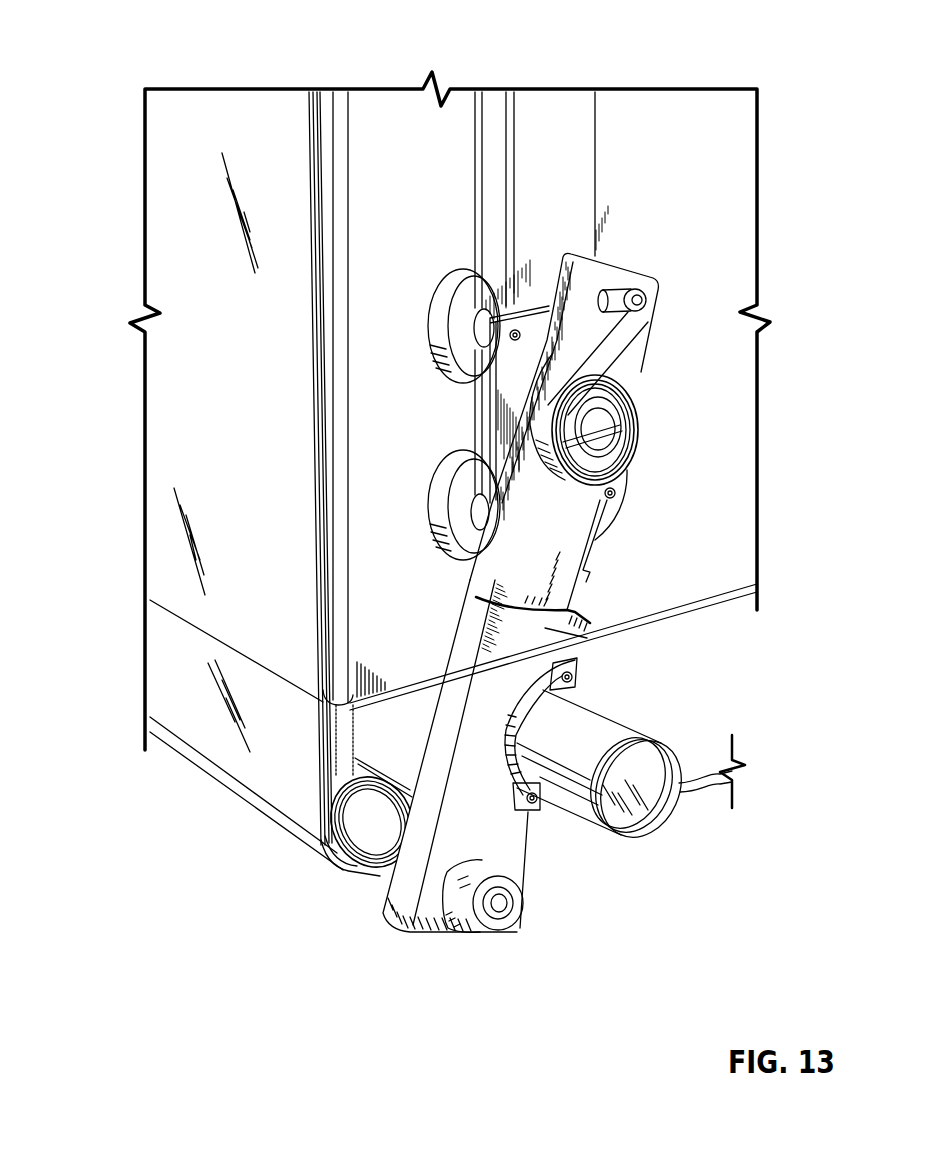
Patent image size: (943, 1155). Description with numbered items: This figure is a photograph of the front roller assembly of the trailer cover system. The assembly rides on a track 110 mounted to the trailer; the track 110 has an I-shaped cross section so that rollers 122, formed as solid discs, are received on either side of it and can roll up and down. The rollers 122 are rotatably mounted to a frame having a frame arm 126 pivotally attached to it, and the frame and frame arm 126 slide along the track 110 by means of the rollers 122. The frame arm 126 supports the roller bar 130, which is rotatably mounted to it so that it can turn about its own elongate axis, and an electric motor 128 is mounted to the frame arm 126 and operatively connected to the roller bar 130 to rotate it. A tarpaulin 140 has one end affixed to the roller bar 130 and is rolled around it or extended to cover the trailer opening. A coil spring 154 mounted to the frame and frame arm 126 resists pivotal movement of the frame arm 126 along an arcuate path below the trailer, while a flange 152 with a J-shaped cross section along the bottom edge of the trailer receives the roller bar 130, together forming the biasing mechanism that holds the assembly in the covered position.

The track 110 is at (555, 153).
The roller 122 is at (445, 286).
The frame arm 126 is at (557, 633).
The electric motor 128 is at (663, 793).
The roller bar 130 is at (462, 892).
The tarpaulin 140 is at (187, 486).
The flange 152 is at (343, 756).
The coil spring 154 is at (637, 444).